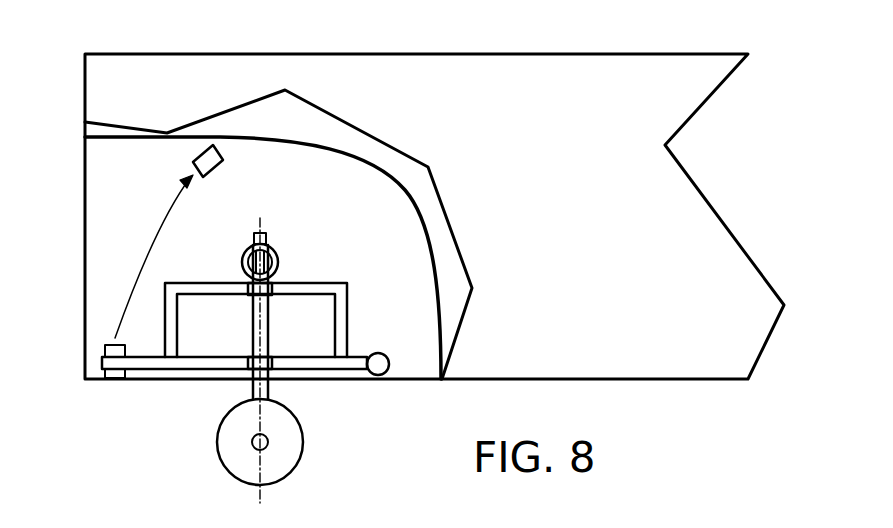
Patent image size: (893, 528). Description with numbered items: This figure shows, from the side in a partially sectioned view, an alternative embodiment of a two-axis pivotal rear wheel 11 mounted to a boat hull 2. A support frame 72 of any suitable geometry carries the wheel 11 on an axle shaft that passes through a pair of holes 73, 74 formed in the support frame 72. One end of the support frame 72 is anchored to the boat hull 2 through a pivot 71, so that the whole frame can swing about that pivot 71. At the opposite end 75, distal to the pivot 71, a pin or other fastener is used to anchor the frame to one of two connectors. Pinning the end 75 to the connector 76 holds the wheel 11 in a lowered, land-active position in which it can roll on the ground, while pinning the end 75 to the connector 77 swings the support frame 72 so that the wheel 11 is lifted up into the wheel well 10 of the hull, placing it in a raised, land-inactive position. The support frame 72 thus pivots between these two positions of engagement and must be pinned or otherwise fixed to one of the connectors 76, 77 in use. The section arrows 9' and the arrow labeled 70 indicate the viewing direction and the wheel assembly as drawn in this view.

The boat hull 2 is at (604, 161).
The wheel well 10 is at (432, 243).
The two-axis pivotal rear wheel 11 is at (288, 455).
The roller assembly 70 is at (304, 383).
The pivot 71 is at (388, 364).
The support frame 72 is at (343, 283).
The hole 73 is at (254, 381).
The hole 74 is at (248, 282).
The end 75 is at (143, 362).
The connector 76 is at (105, 352).
The connector 77 is at (192, 158).
The section line 9' is at (291, 361).